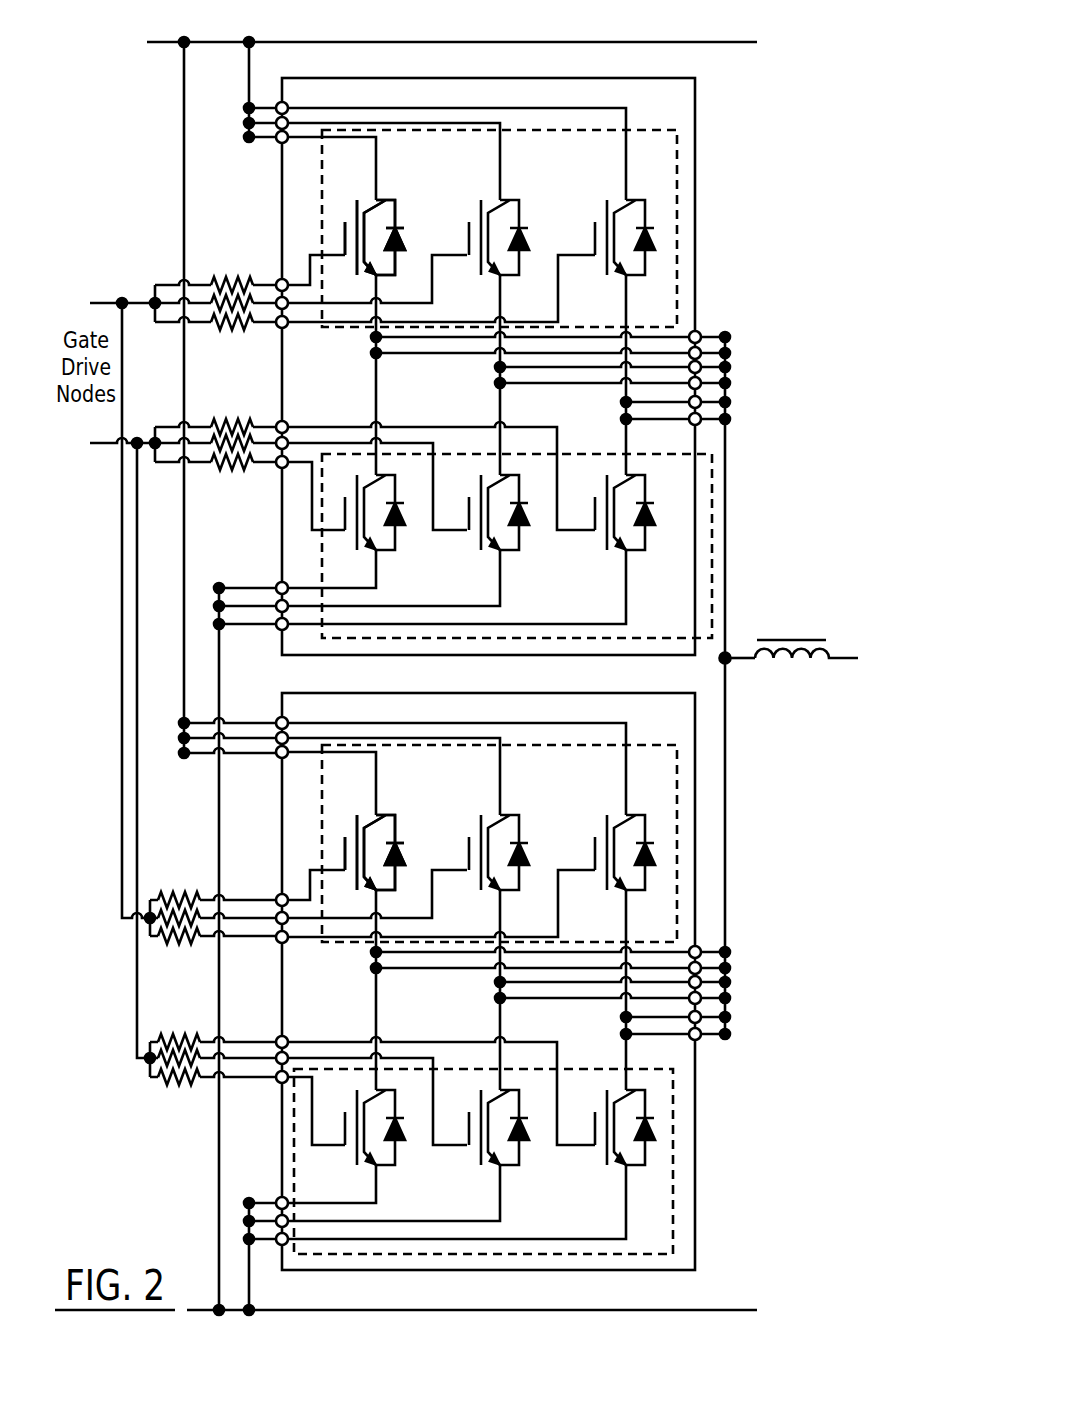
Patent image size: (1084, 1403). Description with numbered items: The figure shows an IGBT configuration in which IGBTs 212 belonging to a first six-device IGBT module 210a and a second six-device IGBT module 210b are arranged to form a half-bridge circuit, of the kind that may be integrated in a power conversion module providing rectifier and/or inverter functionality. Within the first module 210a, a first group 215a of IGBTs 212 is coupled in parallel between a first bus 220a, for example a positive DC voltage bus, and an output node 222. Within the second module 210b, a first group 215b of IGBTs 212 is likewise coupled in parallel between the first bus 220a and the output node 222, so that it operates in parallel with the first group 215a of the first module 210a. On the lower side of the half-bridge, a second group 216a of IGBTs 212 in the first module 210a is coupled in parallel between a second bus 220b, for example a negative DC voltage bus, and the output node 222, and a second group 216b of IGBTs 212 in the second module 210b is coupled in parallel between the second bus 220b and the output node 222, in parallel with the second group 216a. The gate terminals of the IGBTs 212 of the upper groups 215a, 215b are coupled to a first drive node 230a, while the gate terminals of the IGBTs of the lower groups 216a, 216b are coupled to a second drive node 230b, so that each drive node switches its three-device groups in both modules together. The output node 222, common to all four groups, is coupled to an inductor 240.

The first bus 220a is at (712, 42).
The second bus 220b is at (735, 1310).
The first six-device IGBT module 210a is at (544, 366).
The second six-device IGBT module 210b is at (536, 981).
The IGBT 212 is at (398, 182).
The first group of IGBTs of the first module 215a is at (677, 258).
The first group of IGBTs of the second module 215b is at (677, 836).
The second group of IGBTs of the first module 216a is at (713, 518).
The second group of IGBTs of the second module 216b is at (674, 1165).
The output node 222 is at (738, 648).
The inductor 240 is at (802, 656).
The first drive node 230a is at (88, 299).
The second drive node 230b is at (88, 447).